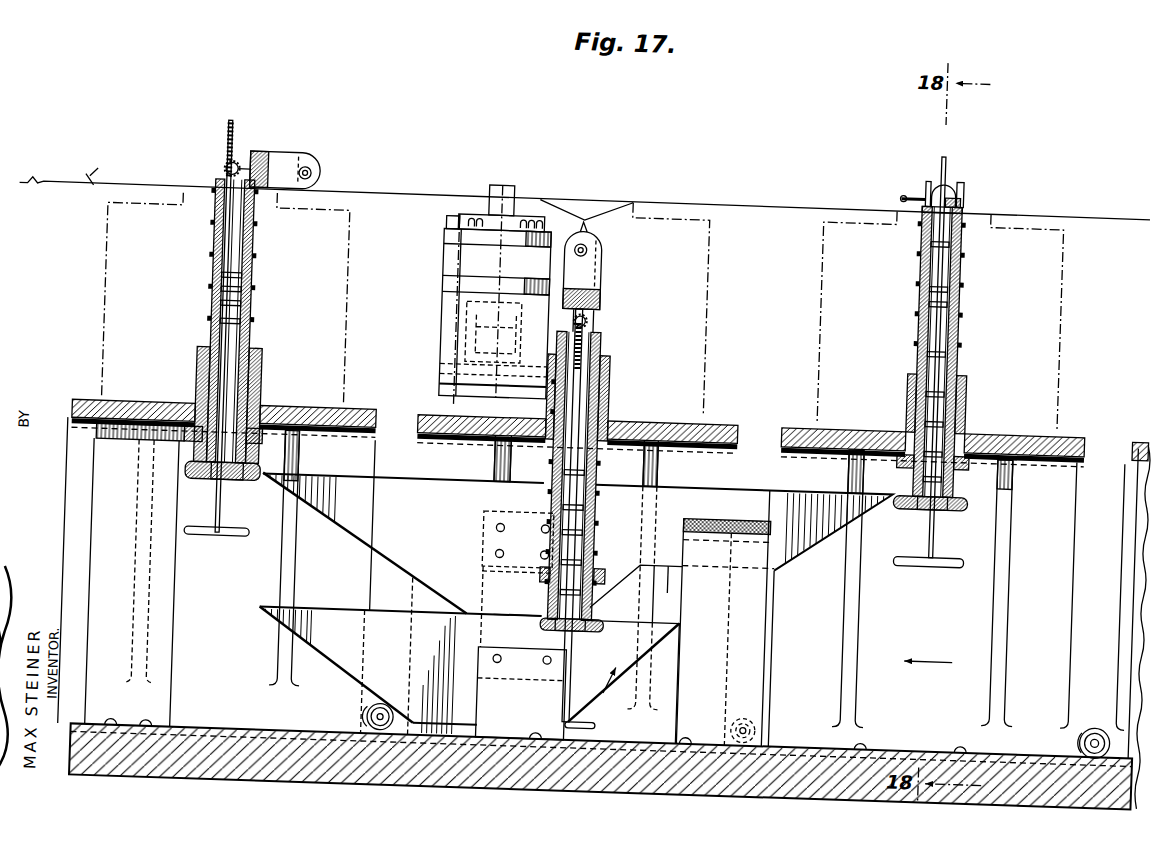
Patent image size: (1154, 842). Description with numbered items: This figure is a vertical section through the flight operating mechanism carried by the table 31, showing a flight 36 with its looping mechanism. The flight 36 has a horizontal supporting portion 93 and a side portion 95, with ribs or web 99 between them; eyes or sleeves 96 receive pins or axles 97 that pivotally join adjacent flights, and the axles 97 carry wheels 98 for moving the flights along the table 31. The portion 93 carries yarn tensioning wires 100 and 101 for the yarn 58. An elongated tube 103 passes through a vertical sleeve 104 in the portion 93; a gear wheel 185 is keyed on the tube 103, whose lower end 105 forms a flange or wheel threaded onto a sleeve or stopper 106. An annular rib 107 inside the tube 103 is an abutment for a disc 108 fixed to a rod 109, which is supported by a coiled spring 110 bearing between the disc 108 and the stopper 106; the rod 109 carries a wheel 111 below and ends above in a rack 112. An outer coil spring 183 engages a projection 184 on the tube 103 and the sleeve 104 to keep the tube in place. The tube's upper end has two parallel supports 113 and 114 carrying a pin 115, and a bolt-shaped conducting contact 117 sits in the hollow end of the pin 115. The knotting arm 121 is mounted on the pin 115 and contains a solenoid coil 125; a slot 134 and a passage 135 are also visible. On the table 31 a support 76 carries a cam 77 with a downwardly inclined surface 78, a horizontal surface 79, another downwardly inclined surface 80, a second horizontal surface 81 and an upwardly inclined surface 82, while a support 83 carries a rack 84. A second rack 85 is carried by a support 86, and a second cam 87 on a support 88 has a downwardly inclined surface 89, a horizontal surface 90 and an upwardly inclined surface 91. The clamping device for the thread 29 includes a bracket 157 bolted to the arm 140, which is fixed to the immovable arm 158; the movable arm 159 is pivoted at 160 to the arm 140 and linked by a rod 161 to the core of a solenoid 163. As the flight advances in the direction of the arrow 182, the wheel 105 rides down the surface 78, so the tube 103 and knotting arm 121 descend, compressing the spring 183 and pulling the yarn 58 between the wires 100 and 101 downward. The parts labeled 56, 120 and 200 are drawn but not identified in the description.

The thread 29 is at (78, 190).
The table 31 is at (258, 738).
The flight 36 is at (367, 414).
The roller foot 56 is at (870, 746).
The yarn 58 is at (40, 204).
The support 76 is at (487, 547).
The cam 77 is at (366, 534).
The downwardly inclined surface 78 is at (818, 548).
The horizontal surface 79 is at (667, 590).
The downwardly inclined surface 80 is at (628, 578).
The second horizontal surface 81 is at (512, 620).
The upwardly inclined surface 82 is at (337, 533).
The support 83 is at (100, 511).
The rack 84 is at (97, 448).
The second rack 85 is at (712, 515).
The support 86 is at (780, 640).
The second cam 87 is at (625, 688).
The support 88 is at (486, 697).
The downwardly inclined surface 89 is at (656, 655).
The horizontal surface 90 is at (450, 728).
The upwardly inclined surface 91 is at (333, 676).
The horizontal supporting portion 93 is at (76, 415).
The side portion 95 is at (72, 548).
The eyes or sleeves 96 is at (378, 732).
The pins or axles 97 is at (377, 723).
The wheels 98 is at (378, 714).
The ribs or web 99 is at (140, 578).
The yarn tensioning wire 100 is at (100, 282).
The yarn tensioning wire 101 is at (348, 291).
The elongated tube 103 is at (248, 341).
The vertical sleeve 104 is at (260, 373).
The lower end of tube 105 is at (255, 491).
The sleeve or stopper 106 is at (214, 491).
The annular rib 107 is at (240, 288).
The disc 108 is at (240, 301).
The rod 109 is at (247, 314).
The coiled spring 110 is at (217, 315).
The wheel 111 is at (228, 547).
The rack 112 is at (218, 140).
The parallel support 113 is at (919, 170).
The parallel support 114 is at (957, 172).
The pivot or pin 115 is at (954, 190).
The conducting contact 117 is at (895, 186).
The gear 120 is at (228, 172).
The knotting arm 121 is at (291, 160).
The solenoid coil 125 is at (256, 162).
The slot 134 is at (292, 168).
The passage 135 is at (304, 178).
The arm 140 is at (438, 378).
The bracket 157 is at (438, 389).
The immovable arm 158 is at (438, 251).
The movable arm 159 is at (438, 264).
The pivot 160 is at (440, 237).
The rod 161 is at (496, 188).
The solenoid 163 is at (463, 349).
The arrow 182 is at (952, 648).
The outer coil spring 183 is at (208, 331).
The projection 184 is at (958, 201).
The gear wheel 185 is at (264, 456).
The piston rod 200 is at (470, 366).